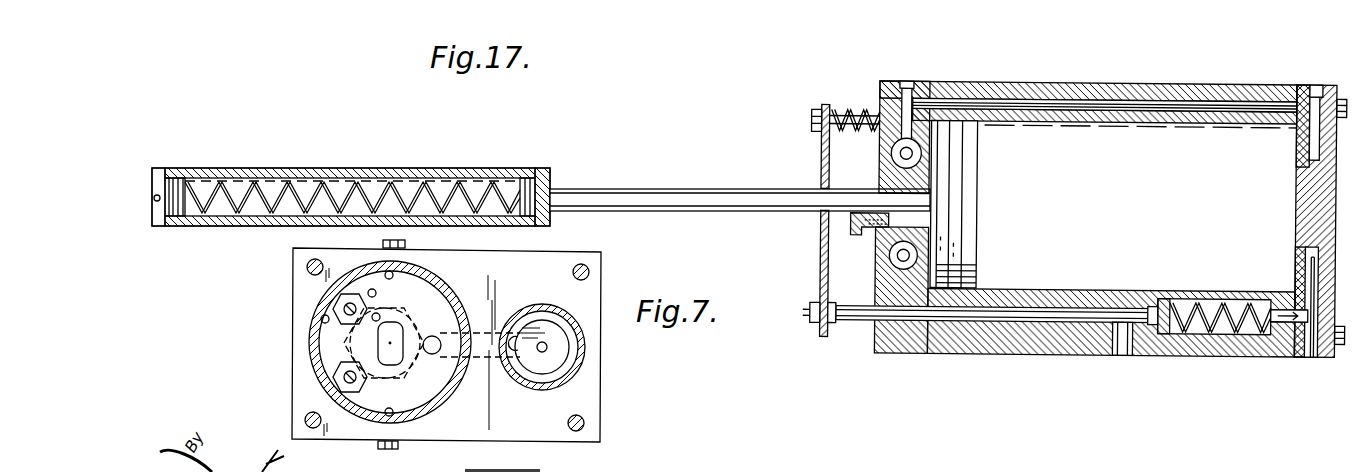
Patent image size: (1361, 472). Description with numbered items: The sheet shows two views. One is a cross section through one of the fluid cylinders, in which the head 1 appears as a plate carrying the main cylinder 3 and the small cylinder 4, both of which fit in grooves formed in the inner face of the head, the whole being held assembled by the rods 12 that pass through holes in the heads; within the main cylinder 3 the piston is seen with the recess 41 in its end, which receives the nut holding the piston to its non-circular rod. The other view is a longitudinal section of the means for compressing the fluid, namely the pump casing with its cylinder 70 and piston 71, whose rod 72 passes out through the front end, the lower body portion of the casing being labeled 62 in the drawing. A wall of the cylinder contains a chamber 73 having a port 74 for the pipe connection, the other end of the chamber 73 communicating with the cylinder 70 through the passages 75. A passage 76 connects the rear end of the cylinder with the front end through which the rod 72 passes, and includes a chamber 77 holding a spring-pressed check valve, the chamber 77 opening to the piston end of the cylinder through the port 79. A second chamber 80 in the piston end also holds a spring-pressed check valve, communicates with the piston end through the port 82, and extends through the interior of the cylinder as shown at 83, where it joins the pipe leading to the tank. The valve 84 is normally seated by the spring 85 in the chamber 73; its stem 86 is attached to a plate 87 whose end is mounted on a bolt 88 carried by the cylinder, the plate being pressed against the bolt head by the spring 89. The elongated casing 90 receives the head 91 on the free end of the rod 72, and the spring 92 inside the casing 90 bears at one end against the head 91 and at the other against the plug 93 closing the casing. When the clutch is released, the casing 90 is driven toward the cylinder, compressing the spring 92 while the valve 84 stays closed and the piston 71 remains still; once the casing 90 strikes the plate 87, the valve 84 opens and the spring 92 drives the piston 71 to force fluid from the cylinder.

In FIG. 7, the head 1 is at (328, 258).
In FIG. 7, the main cylinder 3 is at (437, 277).
In FIG. 7, the small cylinder 4 is at (585, 348).
In FIG. 7, the rods 12 is at (310, 272).
In FIG. 7, the recesses 41 is at (405, 330).
In FIG. 17, the cylinder base 62 is at (1011, 366).
In FIG. 17, the cylinder 70 is at (1096, 82).
In FIG. 17, the piston 71 is at (962, 258).
In FIG. 17, the rod 72 is at (612, 214).
In FIG. 17, the chamber 73 is at (1212, 338).
In FIG. 17, the port 74 is at (1126, 356).
In FIG. 17, the passages 75 is at (1293, 350).
In FIG. 17, the passage 76 is at (1178, 104).
In FIG. 17, the chamber 77 is at (898, 150).
In FIG. 17, the port 79 is at (935, 152).
In FIG. 17, the second chamber 80 is at (878, 340).
In FIG. 17, the port 82 is at (952, 250).
In FIG. 17, the chamber extension 83 is at (909, 362).
In FIG. 17, the valve 84 is at (1164, 294).
In FIG. 17, the spring 85 is at (1208, 298).
In FIG. 17, the stem 86 is at (808, 315).
In FIG. 17, the plate 87 is at (822, 257).
In FIG. 17, the bolt 88 is at (812, 116).
In FIG. 17, the spring 89 is at (863, 108).
In FIG. 17, the elongated casing 90 is at (448, 169).
In FIG. 17, the head 91 is at (532, 176).
In FIG. 17, the spring 92 is at (386, 178).
In FIG. 17, the plug 93 is at (160, 177).